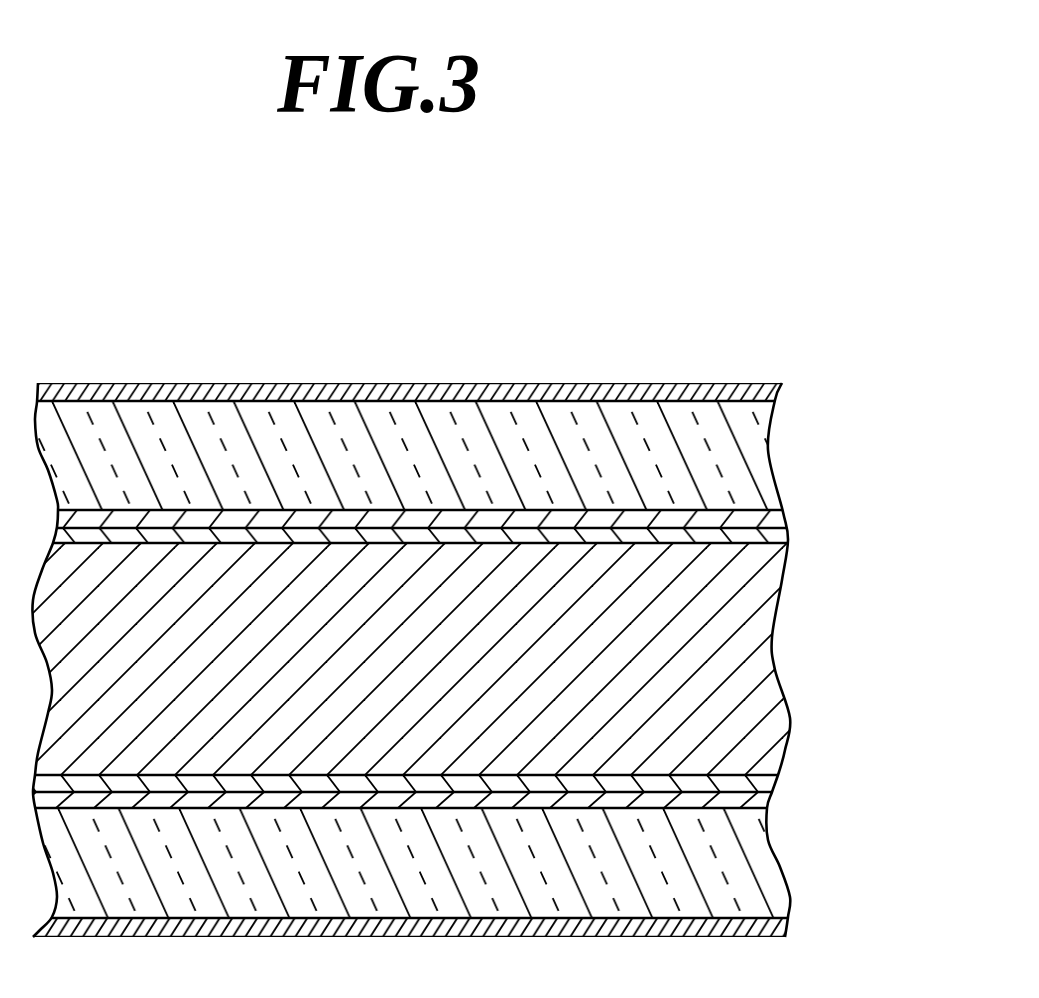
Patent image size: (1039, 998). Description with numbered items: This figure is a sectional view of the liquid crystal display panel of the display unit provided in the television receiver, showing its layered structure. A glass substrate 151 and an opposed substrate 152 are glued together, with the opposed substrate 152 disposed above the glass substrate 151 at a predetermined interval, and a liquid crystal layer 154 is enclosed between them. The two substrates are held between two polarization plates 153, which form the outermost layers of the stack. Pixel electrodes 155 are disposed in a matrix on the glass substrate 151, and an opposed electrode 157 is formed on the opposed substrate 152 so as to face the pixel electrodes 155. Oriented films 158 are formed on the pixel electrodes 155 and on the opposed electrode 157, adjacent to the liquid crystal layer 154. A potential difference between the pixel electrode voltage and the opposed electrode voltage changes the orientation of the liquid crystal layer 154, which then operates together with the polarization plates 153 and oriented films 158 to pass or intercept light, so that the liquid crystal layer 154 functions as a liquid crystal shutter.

The glass substrate 151 is at (763, 873).
The opposed substrate 152 is at (760, 470).
The polarization plate 153 is at (782, 383).
The liquid crystal layer 154 is at (763, 630).
The pixel electrode 155 is at (766, 798).
The opposed electrode 157 is at (782, 512).
The oriented film 158 is at (766, 526).